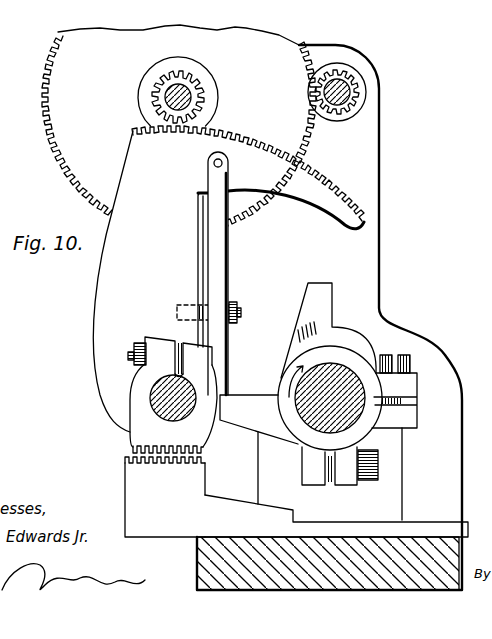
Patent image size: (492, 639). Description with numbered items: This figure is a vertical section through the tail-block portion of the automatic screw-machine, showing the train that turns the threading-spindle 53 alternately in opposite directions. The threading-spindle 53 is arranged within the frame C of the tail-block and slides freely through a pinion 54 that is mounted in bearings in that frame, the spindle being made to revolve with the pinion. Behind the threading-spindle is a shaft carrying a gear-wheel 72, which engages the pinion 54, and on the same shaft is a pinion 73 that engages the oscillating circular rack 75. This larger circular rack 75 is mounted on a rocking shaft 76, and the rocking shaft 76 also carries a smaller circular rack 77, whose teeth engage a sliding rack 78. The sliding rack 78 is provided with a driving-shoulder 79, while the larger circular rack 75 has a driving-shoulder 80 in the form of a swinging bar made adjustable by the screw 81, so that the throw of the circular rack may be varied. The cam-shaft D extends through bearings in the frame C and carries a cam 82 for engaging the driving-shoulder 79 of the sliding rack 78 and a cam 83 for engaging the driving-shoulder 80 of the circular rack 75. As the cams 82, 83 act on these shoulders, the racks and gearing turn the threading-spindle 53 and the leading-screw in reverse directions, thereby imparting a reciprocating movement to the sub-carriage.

The gear-wheel 72 is at (179, 126).
The pinion 73 is at (151, 102).
The oscillating circular rack 75 is at (228, 279).
The threading-spindle 53 is at (343, 107).
The pinion 54 is at (358, 101).
The rocking shaft 76 is at (165, 385).
The smaller circular rack 77 is at (168, 441).
The sliding rack 78 is at (165, 497).
The driving-shoulder 79 is at (294, 514).
The driving-shoulder 80 is at (222, 398).
The screw 81 is at (238, 318).
The cam 82 is at (330, 384).
The cam 83 is at (259, 419).
The frame of the tail-block C is at (197, 563).
The cam-shaft D is at (366, 417).